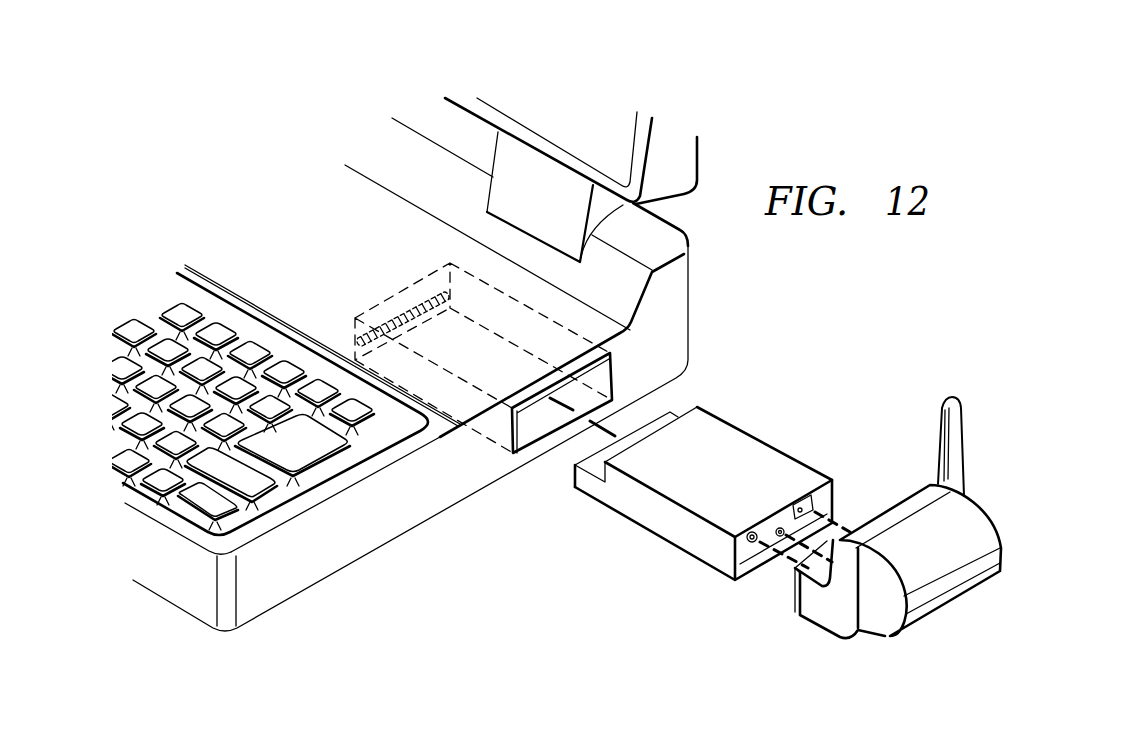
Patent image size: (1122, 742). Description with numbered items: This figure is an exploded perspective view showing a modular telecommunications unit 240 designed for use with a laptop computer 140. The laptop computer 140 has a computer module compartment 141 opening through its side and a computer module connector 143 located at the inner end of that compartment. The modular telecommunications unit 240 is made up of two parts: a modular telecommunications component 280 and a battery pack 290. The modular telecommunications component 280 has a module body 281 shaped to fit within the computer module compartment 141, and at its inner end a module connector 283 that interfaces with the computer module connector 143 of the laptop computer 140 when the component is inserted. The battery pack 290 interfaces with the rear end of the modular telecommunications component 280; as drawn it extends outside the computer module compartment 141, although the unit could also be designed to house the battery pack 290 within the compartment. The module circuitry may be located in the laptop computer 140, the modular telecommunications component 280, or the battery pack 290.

The laptop computer 140 is at (435, 364).
The computer module compartment 141 is at (612, 377).
The computer module connector 143 is at (398, 305).
The modular telecommunications unit 240 is at (741, 527).
The modular telecommunications component 280 is at (666, 476).
The module body 281 is at (712, 427).
The module connector 283 is at (556, 480).
The battery pack 290 is at (803, 640).